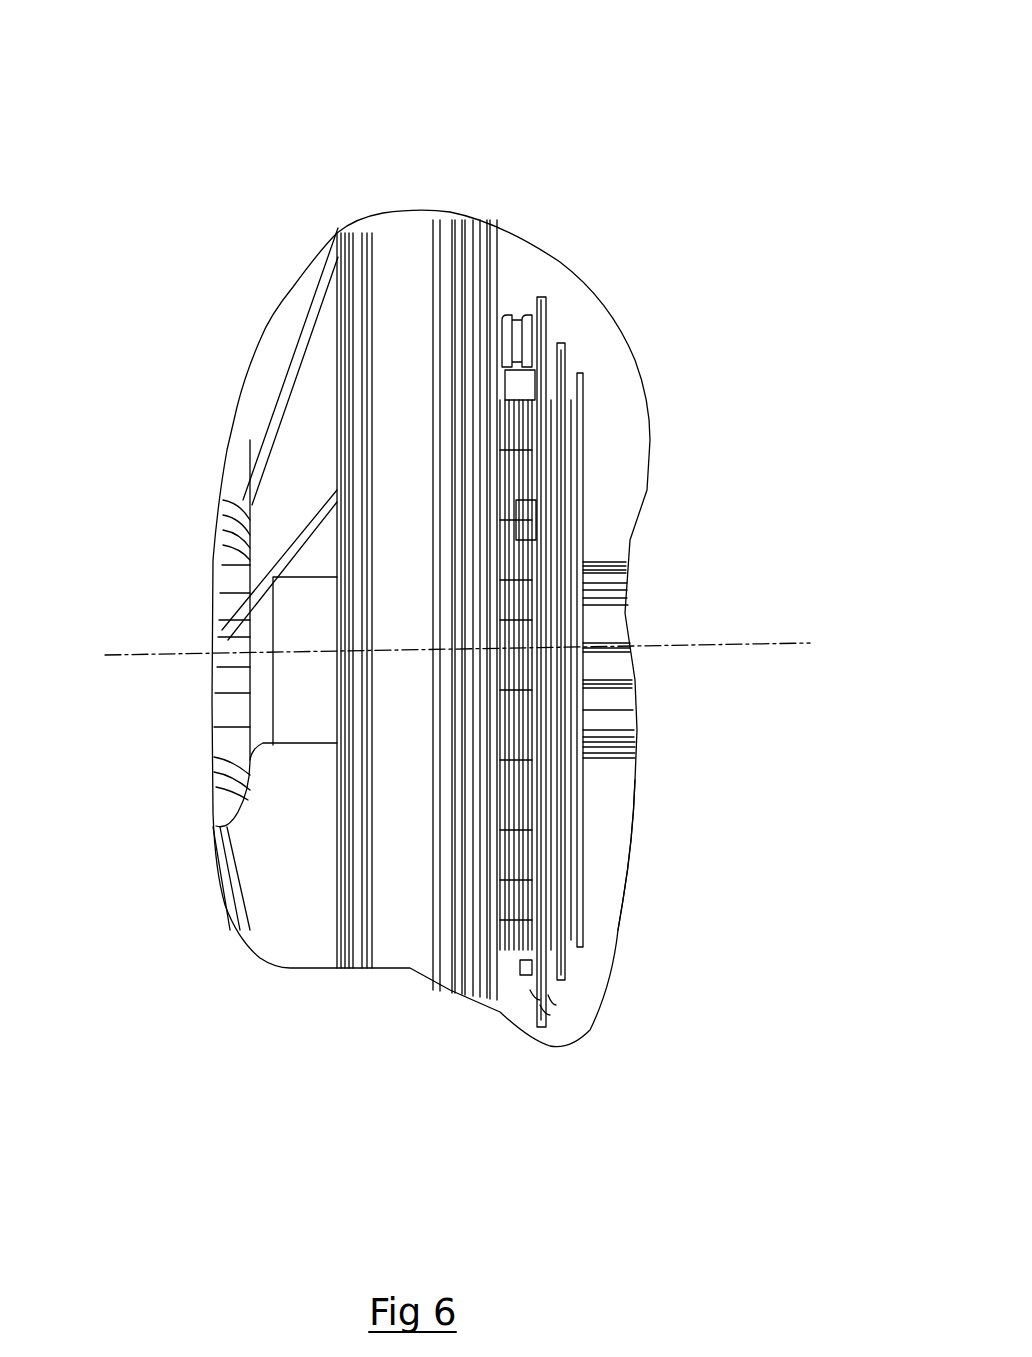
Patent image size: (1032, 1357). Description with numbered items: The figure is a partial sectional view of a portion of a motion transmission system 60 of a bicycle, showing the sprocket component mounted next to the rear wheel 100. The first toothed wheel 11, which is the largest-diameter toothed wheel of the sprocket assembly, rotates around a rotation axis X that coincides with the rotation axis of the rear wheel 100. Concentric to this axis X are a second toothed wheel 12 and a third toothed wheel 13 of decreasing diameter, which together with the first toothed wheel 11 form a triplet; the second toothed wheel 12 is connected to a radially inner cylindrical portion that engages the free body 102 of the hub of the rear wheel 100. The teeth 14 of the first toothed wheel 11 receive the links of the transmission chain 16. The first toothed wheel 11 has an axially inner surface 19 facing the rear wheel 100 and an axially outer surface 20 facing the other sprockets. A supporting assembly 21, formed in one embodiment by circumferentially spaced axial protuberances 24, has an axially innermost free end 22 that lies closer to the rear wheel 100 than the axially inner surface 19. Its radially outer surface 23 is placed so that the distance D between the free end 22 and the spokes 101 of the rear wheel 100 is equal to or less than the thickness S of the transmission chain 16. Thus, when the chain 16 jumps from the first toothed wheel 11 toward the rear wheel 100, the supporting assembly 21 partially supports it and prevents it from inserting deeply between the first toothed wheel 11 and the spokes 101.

The rear wheel 100 is at (395, 865).
The spokes 101 is at (497, 398).
The free body 102 is at (616, 667).
The first toothed wheel 11 is at (537, 830).
The second toothed wheel 12 is at (565, 432).
The third toothed wheel 13 is at (587, 498).
The teeth 14 is at (537, 1000).
The transmission chain 16 is at (522, 385).
The axially inner surface 19 is at (533, 1000).
The axially outer surface 20 is at (550, 1000).
The supporting assembly 21 is at (518, 965).
The axially innermost free end 22 is at (520, 395).
The radially outer surface 23 is at (540, 360).
The axial protuberances 24 is at (527, 522).
The motion transmission system 60 is at (623, 893).
The distance D is at (512, 378).
The thickness S is at (524, 301).
The rotation axis X is at (105, 658).